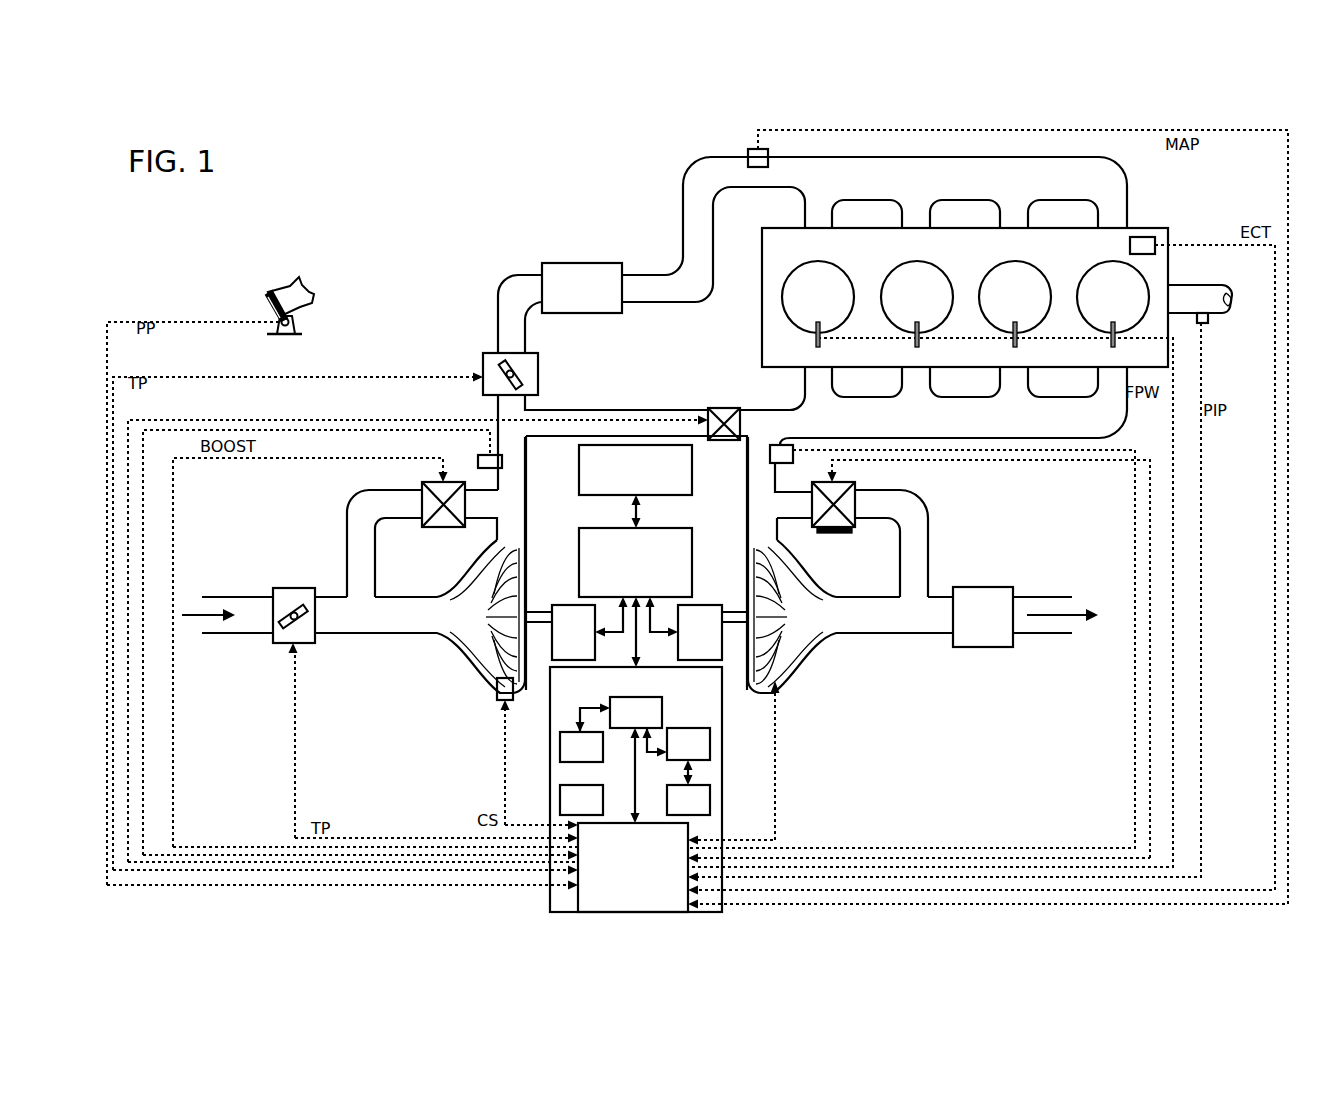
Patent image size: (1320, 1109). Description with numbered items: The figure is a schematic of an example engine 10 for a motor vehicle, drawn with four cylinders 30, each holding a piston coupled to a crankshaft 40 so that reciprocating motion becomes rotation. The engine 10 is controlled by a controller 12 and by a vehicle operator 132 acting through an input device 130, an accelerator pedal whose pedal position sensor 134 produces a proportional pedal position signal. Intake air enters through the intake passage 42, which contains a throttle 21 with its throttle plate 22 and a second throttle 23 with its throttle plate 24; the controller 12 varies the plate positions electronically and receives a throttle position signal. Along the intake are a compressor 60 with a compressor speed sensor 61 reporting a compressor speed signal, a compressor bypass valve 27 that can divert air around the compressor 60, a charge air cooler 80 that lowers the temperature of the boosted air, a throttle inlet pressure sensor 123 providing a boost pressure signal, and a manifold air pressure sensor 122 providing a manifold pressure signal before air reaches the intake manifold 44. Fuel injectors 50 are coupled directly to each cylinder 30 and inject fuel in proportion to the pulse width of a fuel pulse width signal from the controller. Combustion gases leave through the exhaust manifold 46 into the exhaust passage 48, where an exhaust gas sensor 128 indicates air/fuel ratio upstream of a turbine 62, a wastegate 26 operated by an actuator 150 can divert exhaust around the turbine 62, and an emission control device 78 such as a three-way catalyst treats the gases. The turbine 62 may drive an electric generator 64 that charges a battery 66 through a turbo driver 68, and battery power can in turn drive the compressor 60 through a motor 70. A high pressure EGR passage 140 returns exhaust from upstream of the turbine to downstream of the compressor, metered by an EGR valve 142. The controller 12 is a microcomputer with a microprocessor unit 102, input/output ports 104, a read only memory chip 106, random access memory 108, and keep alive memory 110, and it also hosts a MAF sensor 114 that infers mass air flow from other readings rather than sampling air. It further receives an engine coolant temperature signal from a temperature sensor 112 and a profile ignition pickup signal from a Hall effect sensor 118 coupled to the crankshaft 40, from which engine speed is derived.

The engine 10 is at (965, 297).
The controller 12 is at (722, 762).
The throttle 21 is at (283, 588).
The throttle plate 22 is at (300, 602).
The throttle 23 is at (485, 353).
The throttle plate 24 is at (520, 388).
The wastegate 26 is at (855, 492).
The compressor bypass valve 27 is at (422, 490).
The cylinder 30 is at (965, 297).
The crankshaft 40 is at (1210, 286).
The intake passage 42 is at (309, 615).
The intake manifold 44 is at (874, 229).
The exhaust manifold 46 is at (933, 406).
The exhaust passage 48 is at (894, 615).
The fuel injector 50 is at (816, 344).
The compressor 60 is at (482, 655).
The compressor speed sensor 61 is at (497, 700).
The turbine 62 is at (785, 570).
The electric generator 64 is at (700, 632).
The battery 66 is at (579, 478).
The turbo driver 68 is at (672, 528).
The motor 70 is at (573, 632).
The emission control device 78 is at (1025, 617).
The charge air cooler 80 is at (552, 263).
The microprocessor unit 102 is at (603, 705).
The input/output ports 104 is at (633, 867).
The read only memory chip 106 is at (560, 758).
The random access memory 108 is at (675, 728).
The keep alive memory 110 is at (667, 793).
The temperature sensor 112 is at (1143, 237).
The MAF sensor 114 is at (560, 797).
The Hall effect sensor 118 is at (1205, 324).
The manifold air pressure sensor 122 is at (748, 152).
The throttle inlet pressure sensor 123 is at (478, 457).
The exhaust gas sensor 128 is at (805, 478).
The input device 130 is at (270, 302).
The vehicle operator 132 is at (305, 292).
The pedal position sensor 134 is at (292, 322).
The EGR passage 140 is at (613, 420).
The EGR valve 142 is at (724, 408).
The actuator 150 is at (840, 533).